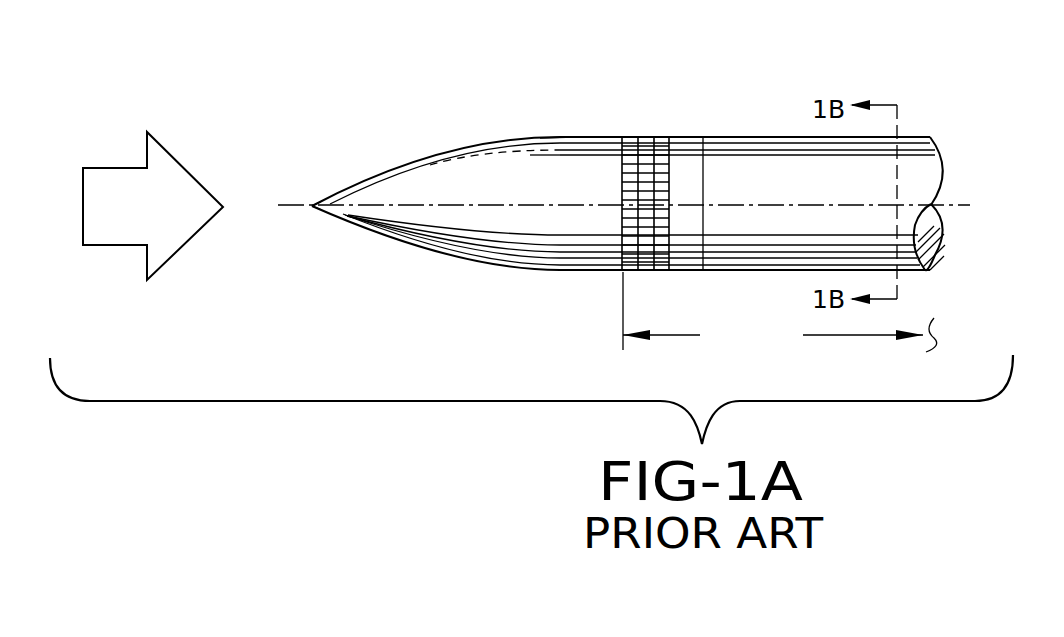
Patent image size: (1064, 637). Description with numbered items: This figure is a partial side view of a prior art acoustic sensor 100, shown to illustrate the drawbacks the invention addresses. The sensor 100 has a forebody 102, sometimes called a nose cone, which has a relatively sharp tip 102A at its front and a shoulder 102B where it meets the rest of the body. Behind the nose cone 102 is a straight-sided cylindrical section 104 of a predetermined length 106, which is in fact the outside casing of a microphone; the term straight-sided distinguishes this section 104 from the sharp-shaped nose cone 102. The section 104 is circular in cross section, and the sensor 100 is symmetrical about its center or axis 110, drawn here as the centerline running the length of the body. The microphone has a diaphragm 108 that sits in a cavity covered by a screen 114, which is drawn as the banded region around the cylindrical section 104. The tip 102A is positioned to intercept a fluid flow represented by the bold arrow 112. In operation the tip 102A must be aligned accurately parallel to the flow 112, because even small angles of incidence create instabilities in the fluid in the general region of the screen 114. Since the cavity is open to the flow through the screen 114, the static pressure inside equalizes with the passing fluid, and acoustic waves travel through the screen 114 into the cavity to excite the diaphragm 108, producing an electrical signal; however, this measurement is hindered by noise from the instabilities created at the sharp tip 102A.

The prior art acoustic sensor 100 is at (474, 103).
The forebody 102 is at (393, 172).
The tip 102A is at (311, 206).
The shoulder 102B is at (536, 137).
The straight-sided cylindrical section 104 is at (735, 137).
The predetermined length 106 is at (780, 312).
The diaphragm 108 is at (778, 170).
The center 110 is at (950, 203).
The fluid flow 112 is at (105, 168).
The screen 114 is at (647, 137).